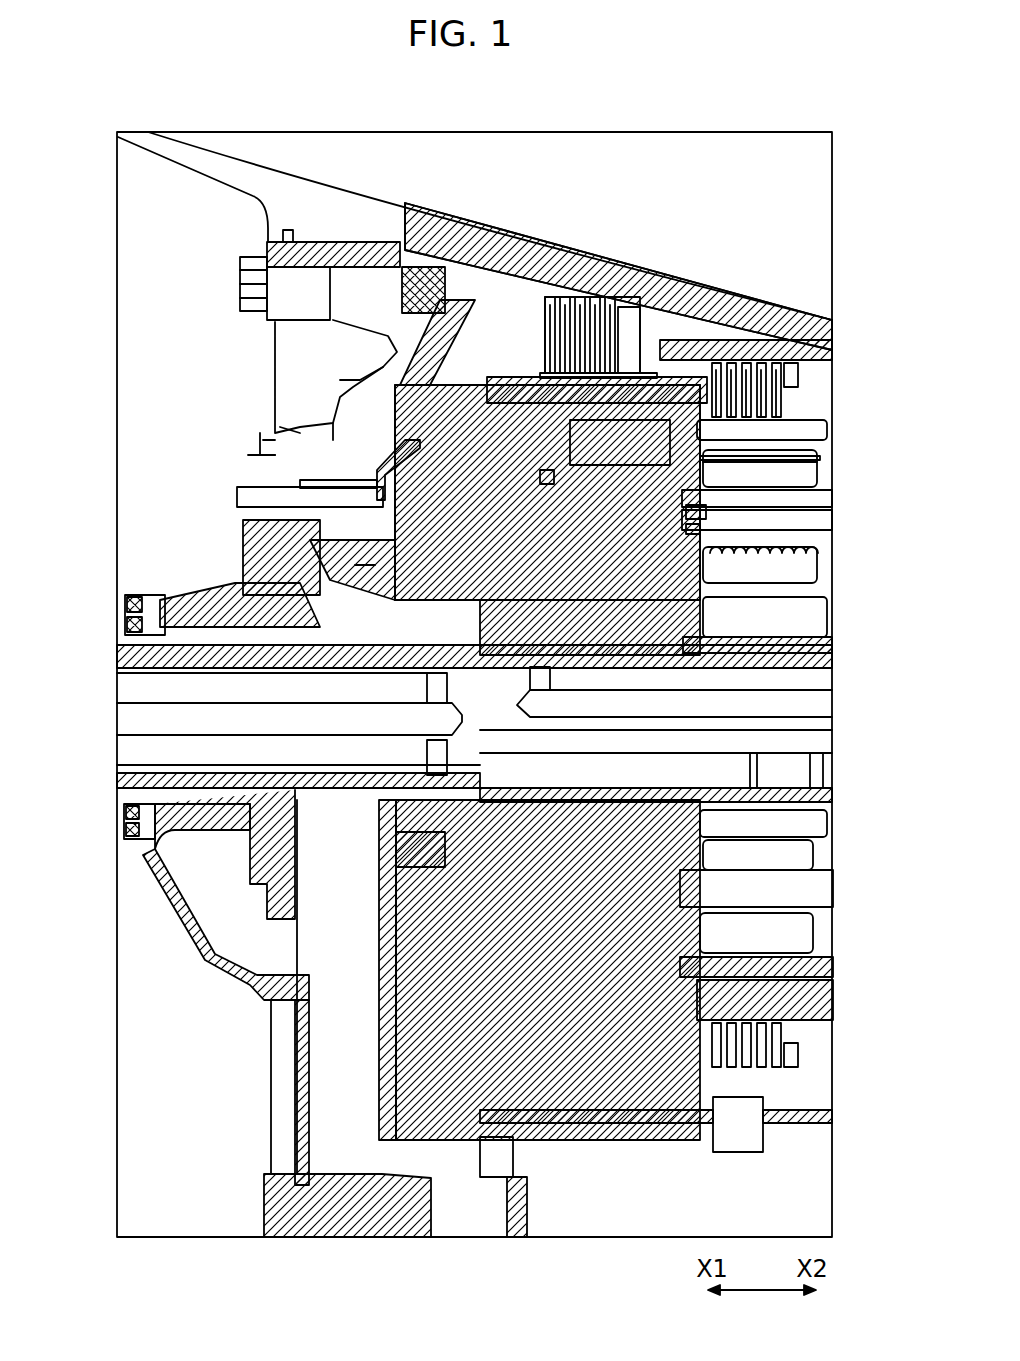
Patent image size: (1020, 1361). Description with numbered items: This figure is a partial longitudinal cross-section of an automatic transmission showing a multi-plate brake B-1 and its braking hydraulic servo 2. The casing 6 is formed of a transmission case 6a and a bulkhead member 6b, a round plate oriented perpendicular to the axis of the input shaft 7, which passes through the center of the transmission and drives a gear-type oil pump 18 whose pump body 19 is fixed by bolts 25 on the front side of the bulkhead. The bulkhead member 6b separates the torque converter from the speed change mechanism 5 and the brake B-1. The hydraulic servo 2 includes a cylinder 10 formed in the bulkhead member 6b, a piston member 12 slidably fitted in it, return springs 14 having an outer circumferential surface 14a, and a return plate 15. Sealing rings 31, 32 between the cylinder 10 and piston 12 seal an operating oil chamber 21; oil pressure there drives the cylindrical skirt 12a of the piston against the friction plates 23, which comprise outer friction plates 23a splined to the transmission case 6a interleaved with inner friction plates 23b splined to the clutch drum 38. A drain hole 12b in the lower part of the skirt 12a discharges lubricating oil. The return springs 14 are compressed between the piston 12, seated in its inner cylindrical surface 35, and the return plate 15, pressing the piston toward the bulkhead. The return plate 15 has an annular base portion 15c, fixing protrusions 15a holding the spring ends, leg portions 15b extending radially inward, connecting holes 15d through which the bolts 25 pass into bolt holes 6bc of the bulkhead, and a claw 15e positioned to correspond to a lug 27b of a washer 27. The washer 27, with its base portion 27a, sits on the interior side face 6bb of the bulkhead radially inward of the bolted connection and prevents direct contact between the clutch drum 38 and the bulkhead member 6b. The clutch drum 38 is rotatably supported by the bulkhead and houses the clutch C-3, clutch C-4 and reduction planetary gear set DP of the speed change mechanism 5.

The casing 6 is at (295, 152).
The transmission case 6a is at (350, 210).
The bulkhead member 6b is at (315, 243).
The interior side face 6bb is at (370, 575).
The bolt holes 6bc is at (248, 463).
The return springs 14 is at (425, 345).
The outer circumferential surface 14a is at (445, 420).
The cylinder 10 is at (440, 350).
The operating oil chamber 21 is at (455, 355).
The piston member 12 is at (470, 340).
The cylindrical skirt 12a is at (520, 330).
The drain hole 12b is at (440, 1042).
The sealing ring 31 is at (490, 350).
The return plate 15 is at (505, 340).
The fixing protrusions 15a is at (697, 458).
The leg portions 15b is at (280, 427).
The base portion 15c is at (690, 530).
The connecting holes 15d is at (263, 440).
The claw 15e is at (385, 483).
The brake B-1 is at (655, 184).
The hydraulic servo 2 is at (524, 322).
The friction plates 23 is at (700, 221).
The outer friction plates 23a is at (553, 305).
The inner friction plates 23b is at (605, 300).
The clutch C-4 is at (658, 389).
The clutch C-3 is at (770, 350).
The speed change mechanism 5 is at (752, 282).
The reduction planetary gear set DP is at (826, 408).
The sealing ring 32 is at (440, 368).
The inner cylindrical surface 35 is at (440, 400).
The bolts 25 is at (410, 470).
The washer 27 is at (305, 657).
The base portion 27a is at (440, 670).
The lug 27b is at (345, 548).
The oil pump 18 is at (292, 580).
The pump body 19 is at (195, 605).
The input shaft 7 is at (143, 690).
The clutch drum 38 is at (548, 475).